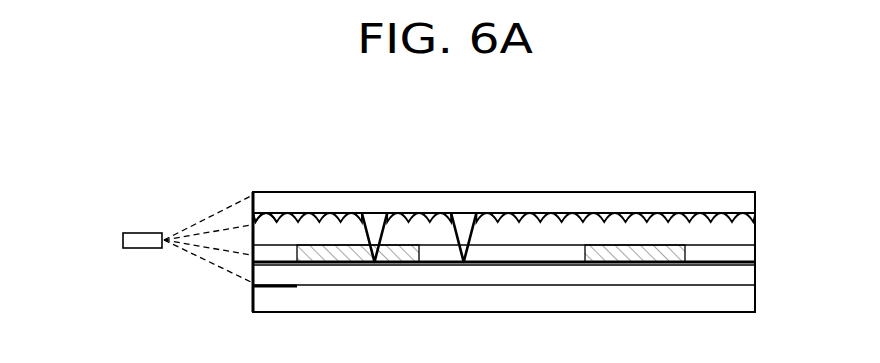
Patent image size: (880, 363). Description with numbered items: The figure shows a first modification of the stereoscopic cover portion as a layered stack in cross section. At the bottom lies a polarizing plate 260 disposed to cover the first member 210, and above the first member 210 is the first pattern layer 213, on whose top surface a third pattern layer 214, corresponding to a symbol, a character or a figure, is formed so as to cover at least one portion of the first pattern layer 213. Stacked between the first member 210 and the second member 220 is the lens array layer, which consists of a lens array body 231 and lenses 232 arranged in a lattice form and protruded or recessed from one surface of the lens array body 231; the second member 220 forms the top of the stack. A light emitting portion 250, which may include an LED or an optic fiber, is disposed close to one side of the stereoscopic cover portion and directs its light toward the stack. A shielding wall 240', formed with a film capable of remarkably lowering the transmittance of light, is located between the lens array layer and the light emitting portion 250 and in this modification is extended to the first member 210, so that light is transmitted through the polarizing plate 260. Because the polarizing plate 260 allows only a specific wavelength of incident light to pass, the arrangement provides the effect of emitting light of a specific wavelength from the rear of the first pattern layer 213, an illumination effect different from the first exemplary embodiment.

The light emitting portion 250 is at (142, 232).
The shielding wall 240' is at (246, 176).
The second member 220 is at (755, 197).
The lenses 232 is at (755, 215).
The lens array body 231 is at (747, 233).
The third pattern layer 214 is at (688, 249).
The first pattern layer 213 is at (563, 262).
The first member 210 is at (747, 275).
The polarizing plate 260 is at (747, 302).